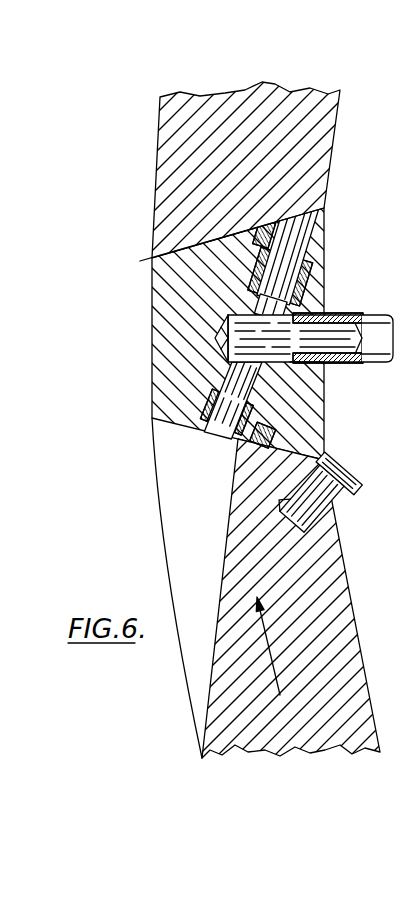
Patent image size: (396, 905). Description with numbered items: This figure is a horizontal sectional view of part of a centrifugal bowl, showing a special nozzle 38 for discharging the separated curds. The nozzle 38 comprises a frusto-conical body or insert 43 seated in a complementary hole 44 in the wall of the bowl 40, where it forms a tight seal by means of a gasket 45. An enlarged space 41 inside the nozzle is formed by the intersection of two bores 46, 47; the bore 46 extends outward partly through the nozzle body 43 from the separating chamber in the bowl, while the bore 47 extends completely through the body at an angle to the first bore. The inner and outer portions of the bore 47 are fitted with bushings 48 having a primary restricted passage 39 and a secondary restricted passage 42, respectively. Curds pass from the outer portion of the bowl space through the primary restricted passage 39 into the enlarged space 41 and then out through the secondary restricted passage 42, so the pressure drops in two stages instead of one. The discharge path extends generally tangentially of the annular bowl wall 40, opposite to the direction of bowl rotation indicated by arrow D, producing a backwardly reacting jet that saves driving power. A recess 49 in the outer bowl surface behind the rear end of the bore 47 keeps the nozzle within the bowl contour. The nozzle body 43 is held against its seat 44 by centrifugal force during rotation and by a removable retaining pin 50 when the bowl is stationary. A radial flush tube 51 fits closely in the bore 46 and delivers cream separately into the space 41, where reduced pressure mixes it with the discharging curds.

The nozzle 38 is at (143, 287).
The primary restricted passage 39 is at (300, 258).
The bowl 40 is at (325, 588).
The enlarged space 41 is at (215, 339).
The secondary restricted passage 42 is at (224, 432).
The nozzle body 43 is at (175, 310).
The hole 44 is at (180, 258).
The gasket 45 is at (230, 170).
The bore 46 is at (295, 380).
The bore 47 is at (255, 285).
The bushings 48 is at (205, 410).
The recess 49 is at (172, 524).
The retaining pin 50 is at (350, 480).
The flush tube 51 is at (356, 316).
The arrow D is at (265, 648).